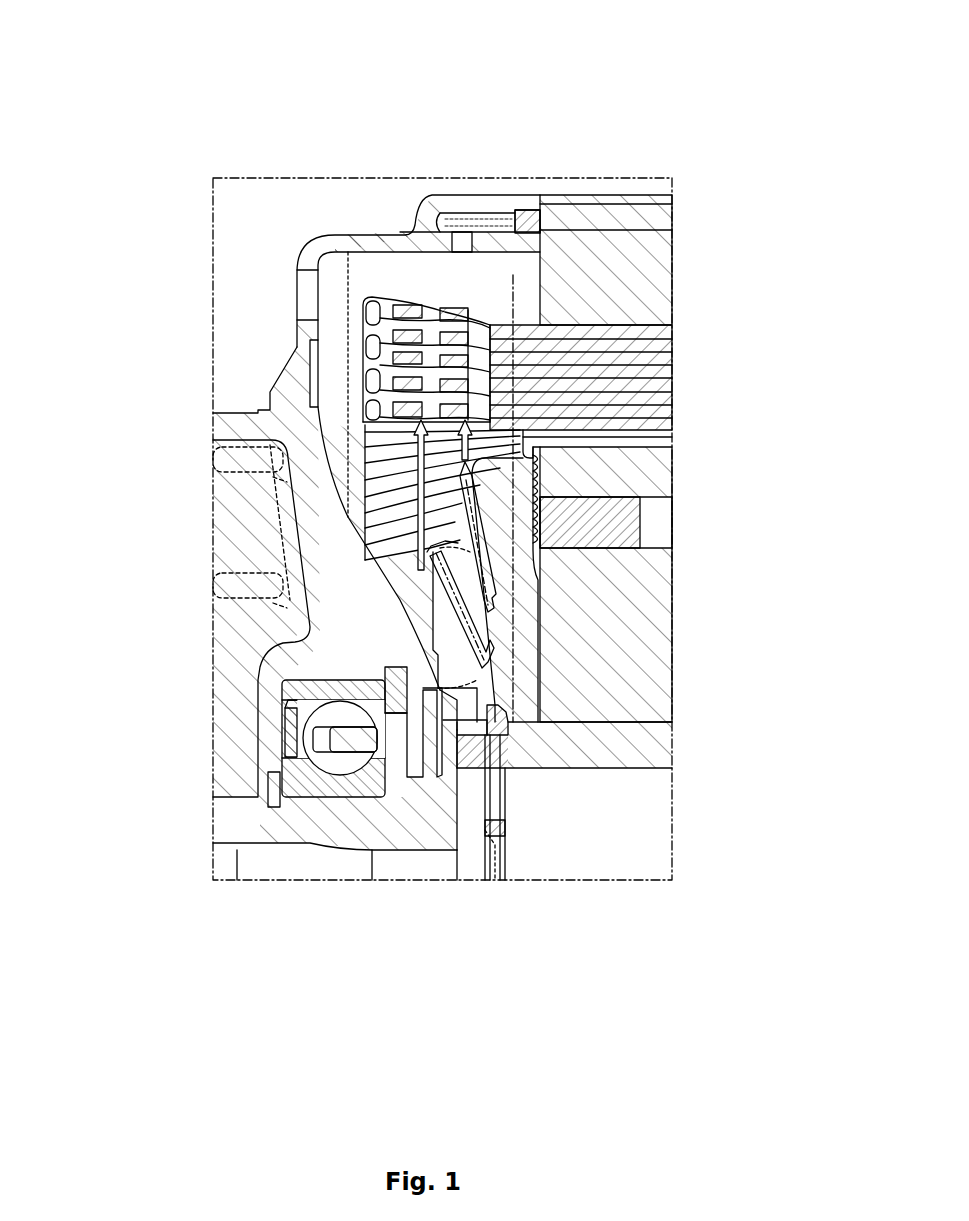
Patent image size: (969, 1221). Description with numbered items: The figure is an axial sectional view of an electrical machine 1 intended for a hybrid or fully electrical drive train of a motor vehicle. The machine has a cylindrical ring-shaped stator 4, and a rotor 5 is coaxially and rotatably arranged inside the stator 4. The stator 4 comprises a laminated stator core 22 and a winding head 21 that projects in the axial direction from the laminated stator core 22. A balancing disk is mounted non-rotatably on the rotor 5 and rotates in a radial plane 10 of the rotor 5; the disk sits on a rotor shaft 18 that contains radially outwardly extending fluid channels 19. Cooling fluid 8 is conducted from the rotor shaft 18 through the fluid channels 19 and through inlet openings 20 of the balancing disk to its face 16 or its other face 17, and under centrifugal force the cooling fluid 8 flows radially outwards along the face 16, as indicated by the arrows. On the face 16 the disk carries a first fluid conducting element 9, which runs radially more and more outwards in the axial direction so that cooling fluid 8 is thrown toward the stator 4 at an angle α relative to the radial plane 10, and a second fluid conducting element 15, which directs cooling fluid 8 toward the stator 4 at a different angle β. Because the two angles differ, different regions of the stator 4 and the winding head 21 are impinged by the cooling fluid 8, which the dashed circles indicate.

The electrical machine 1 is at (408, 140).
The stator 4 is at (597, 240).
The rotor 5 is at (563, 826).
The cooling fluid 8 is at (490, 862).
The first fluid conducting element 9 is at (470, 532).
The radial plane 10 is at (515, 302).
The second fluid conducting element 15 is at (463, 627).
The face 16 is at (429, 593).
The face 17 is at (541, 512).
The rotor shaft 18 is at (650, 748).
The fluid channels 19 is at (508, 733).
The inlet openings 20 is at (476, 716).
The winding head 21 is at (433, 297).
The laminated stator core 22 is at (618, 298).